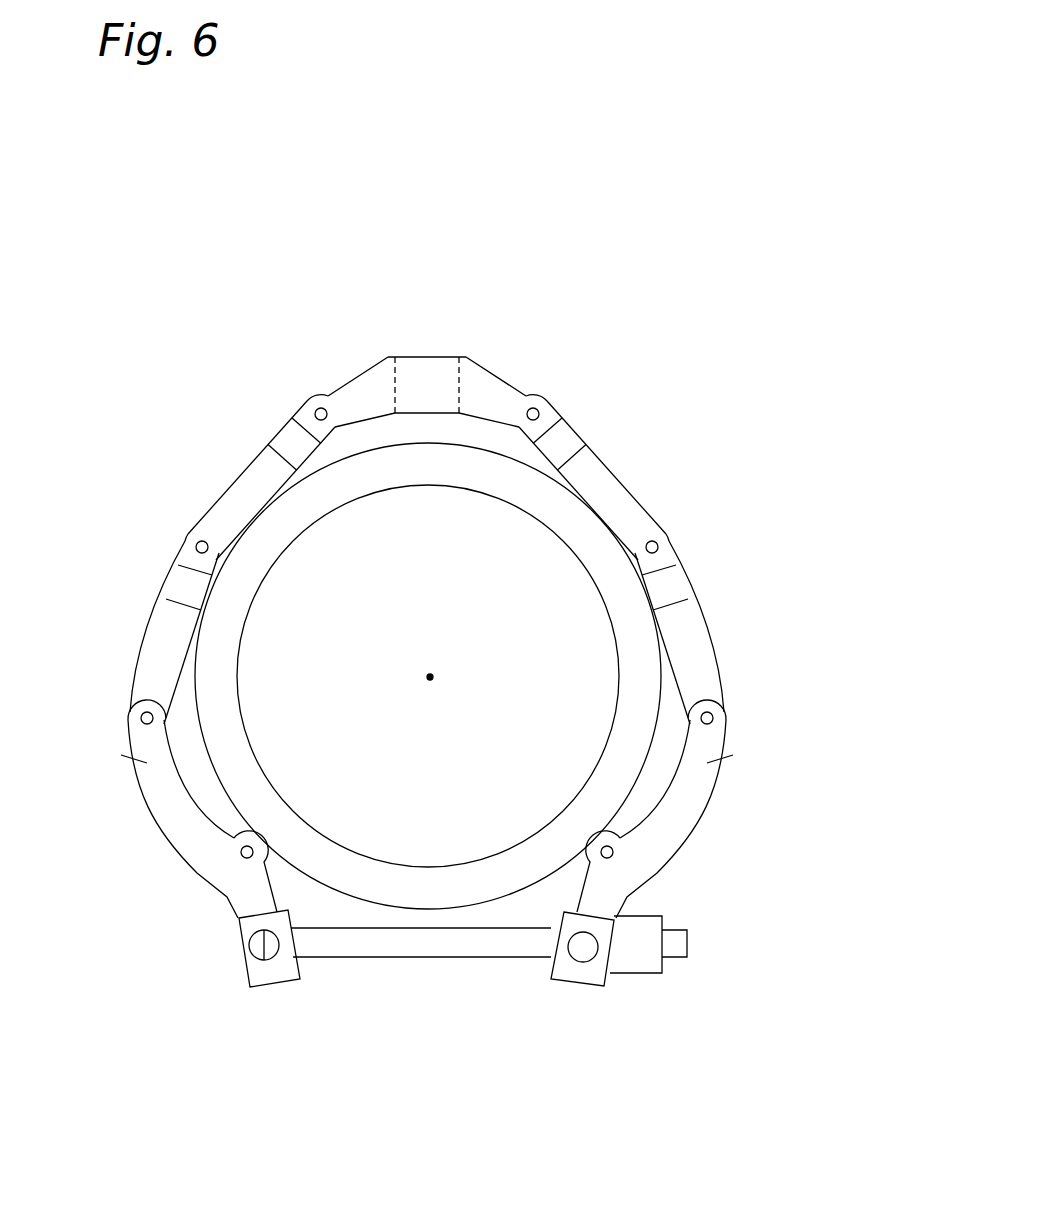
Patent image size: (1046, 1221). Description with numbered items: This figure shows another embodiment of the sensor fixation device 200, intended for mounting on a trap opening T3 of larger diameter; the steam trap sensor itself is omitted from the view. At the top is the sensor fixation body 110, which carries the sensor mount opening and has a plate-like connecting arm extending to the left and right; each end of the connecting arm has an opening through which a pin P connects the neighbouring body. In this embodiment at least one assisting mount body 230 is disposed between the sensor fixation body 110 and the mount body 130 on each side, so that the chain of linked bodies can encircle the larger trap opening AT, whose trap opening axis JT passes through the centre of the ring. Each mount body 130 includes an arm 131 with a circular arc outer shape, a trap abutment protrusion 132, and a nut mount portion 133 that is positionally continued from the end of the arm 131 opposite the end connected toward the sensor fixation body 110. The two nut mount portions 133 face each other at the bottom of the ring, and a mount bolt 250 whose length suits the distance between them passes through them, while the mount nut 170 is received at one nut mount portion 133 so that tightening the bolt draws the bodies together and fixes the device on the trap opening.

The sensor fixation device 200 is at (460, 638).
The sensor fixation body 110 is at (490, 377).
The pin P is at (318, 410).
The assisting mount body 230 is at (227, 508).
The trap opening T3 is at (303, 497).
The trap opening axis JT is at (430, 677).
The trap opening AT is at (283, 737).
The mount body 130 is at (463, 844).
The arm 131 is at (707, 763).
The trap abutment protrusion 132 is at (627, 842).
The nut mount portion 133 is at (695, 900).
The mount bolt 250 is at (483, 948).
The mount nut 170 is at (637, 962).